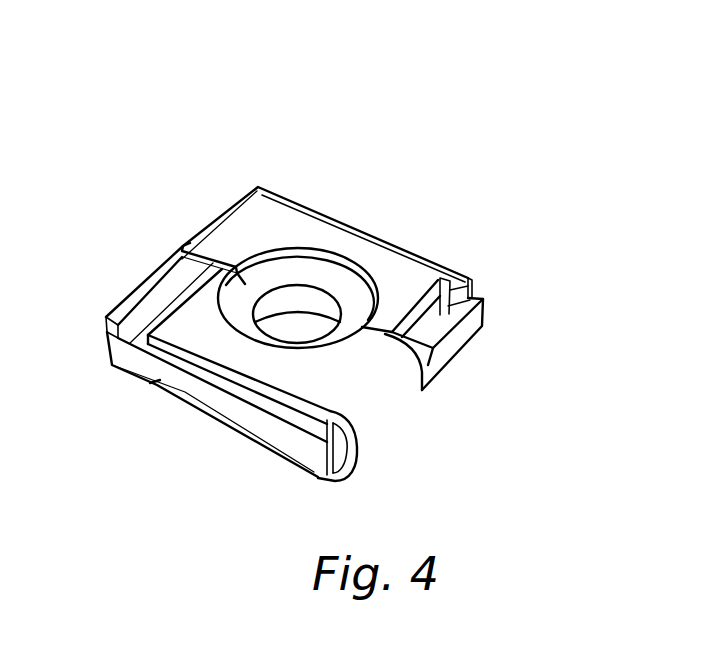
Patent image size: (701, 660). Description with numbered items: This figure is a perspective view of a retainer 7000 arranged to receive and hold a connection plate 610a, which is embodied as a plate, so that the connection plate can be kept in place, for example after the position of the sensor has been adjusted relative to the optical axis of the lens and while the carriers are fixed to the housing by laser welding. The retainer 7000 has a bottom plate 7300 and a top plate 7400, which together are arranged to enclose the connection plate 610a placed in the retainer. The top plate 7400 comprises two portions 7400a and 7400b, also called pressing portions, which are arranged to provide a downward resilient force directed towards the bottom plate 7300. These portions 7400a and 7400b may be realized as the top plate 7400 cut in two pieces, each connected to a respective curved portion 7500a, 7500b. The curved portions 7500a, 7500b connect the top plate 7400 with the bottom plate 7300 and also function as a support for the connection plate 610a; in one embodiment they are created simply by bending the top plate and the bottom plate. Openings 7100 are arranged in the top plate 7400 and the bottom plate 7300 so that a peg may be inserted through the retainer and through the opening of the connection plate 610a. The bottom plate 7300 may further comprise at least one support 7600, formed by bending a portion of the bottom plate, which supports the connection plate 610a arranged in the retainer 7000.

The retainer 7000 is at (359, 110).
The openings 7100 is at (298, 318).
The bottom plate 7300 is at (406, 421).
The top plate 7400 is at (438, 178).
The portion 7400a is at (333, 395).
The portion 7400b is at (257, 224).
The curved portion 7500a is at (370, 445).
The curved portion 7500b is at (186, 233).
The support 7600 is at (149, 388).
The connection plate 610a is at (431, 320).